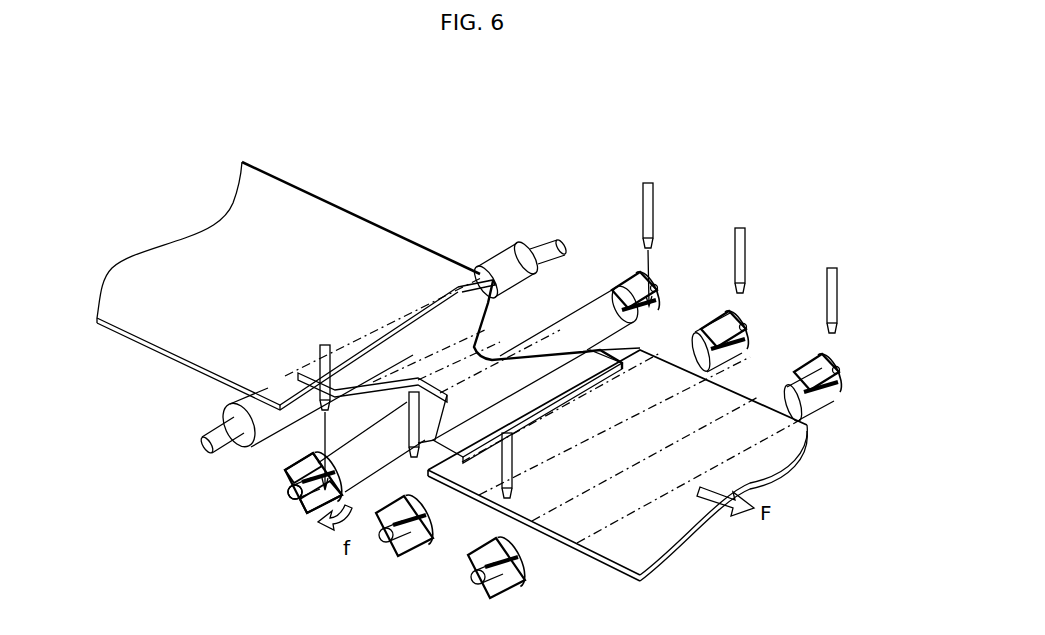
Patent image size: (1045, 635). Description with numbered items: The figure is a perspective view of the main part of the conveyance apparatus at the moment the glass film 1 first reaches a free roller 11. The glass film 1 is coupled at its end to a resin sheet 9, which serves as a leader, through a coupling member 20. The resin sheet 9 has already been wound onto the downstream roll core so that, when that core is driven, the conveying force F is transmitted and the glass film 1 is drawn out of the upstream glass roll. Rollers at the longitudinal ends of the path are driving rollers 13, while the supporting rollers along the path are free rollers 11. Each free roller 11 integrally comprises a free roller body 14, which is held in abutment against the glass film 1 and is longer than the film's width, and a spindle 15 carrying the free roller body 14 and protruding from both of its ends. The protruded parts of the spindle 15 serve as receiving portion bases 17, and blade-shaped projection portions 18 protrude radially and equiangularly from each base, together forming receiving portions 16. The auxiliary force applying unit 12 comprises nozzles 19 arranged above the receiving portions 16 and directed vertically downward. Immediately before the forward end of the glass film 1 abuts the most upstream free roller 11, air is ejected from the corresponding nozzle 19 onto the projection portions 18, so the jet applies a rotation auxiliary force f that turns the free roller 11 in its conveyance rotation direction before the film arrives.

The glass film 1 is at (233, 253).
The resin sheet 9 is at (652, 525).
The free roller 11 is at (580, 291).
The auxiliary force applying unit 12 is at (268, 493).
The driving roller 13 is at (243, 402).
The free roller body 14 is at (358, 463).
The spindle 15 is at (290, 497).
The receiving portion 16 is at (305, 519).
The receiving portion base 17 is at (260, 518).
The projection portion 18 is at (315, 464).
The nozzle 19 is at (320, 372).
The coupling member 20 is at (425, 328).